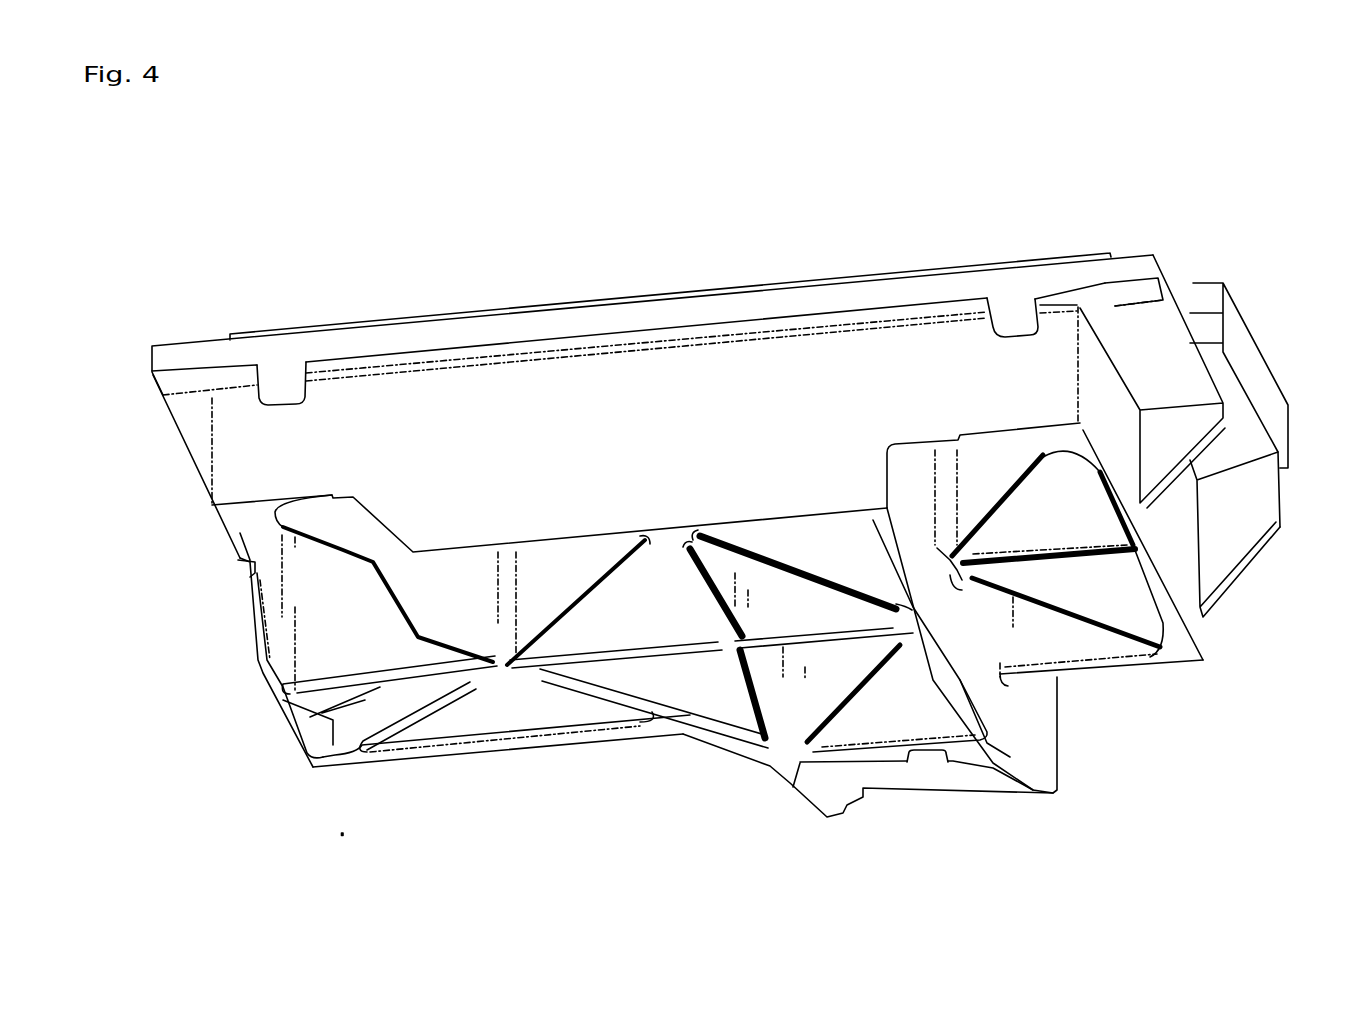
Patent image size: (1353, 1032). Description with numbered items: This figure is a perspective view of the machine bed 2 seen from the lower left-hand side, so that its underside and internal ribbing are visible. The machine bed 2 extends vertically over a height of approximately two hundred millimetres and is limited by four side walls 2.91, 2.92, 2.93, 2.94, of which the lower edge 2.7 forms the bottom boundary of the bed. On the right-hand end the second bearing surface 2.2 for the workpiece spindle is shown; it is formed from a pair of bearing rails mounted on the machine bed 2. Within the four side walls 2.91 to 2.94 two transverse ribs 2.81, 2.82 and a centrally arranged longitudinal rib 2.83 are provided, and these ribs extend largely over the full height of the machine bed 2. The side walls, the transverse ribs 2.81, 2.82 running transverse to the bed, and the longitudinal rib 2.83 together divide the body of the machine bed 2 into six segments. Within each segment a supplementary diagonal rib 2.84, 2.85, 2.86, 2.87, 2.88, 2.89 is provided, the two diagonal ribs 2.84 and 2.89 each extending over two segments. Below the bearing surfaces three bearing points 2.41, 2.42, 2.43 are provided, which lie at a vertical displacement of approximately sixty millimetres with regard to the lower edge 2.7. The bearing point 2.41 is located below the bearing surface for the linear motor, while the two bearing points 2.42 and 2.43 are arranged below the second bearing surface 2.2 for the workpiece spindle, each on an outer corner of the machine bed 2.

The machine bed 2 is at (278, 243).
The second bearing surface 2.2 is at (1166, 249).
The lower edge 2.7 is at (280, 697).
The bearing point 2.41 is at (953, 770).
The bearing point 2.42 is at (235, 515).
The bearing point 2.43 is at (1063, 445).
The transverse rib 2.81 is at (758, 693).
The transverse rib 2.82 is at (983, 708).
The longitudinal rib 2.83 is at (655, 653).
The diagonal rib 2.84 is at (583, 587).
The diagonal rib 2.85 is at (790, 572).
The diagonal rib 2.86 is at (1000, 490).
The diagonal rib 2.87 is at (1065, 590).
The diagonal rib 2.88 is at (863, 693).
The diagonal rib 2.89 is at (567, 680).
The side wall 2.91 is at (447, 729).
The side wall 2.92 is at (268, 563).
The side wall 2.93 is at (417, 422).
The side wall 2.94 is at (1180, 567).